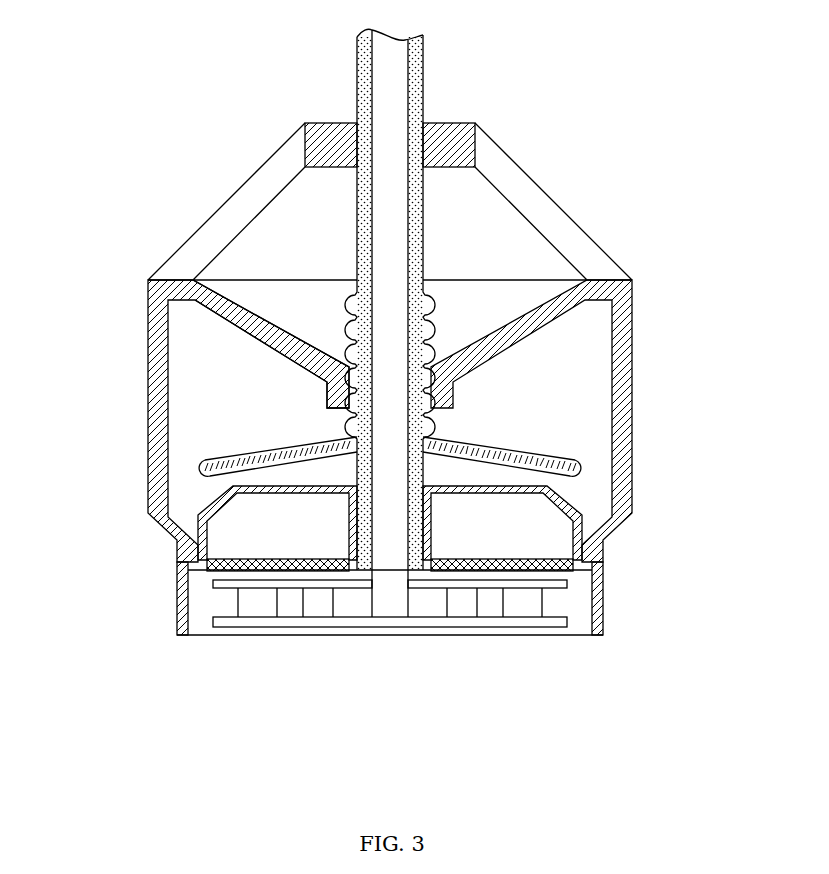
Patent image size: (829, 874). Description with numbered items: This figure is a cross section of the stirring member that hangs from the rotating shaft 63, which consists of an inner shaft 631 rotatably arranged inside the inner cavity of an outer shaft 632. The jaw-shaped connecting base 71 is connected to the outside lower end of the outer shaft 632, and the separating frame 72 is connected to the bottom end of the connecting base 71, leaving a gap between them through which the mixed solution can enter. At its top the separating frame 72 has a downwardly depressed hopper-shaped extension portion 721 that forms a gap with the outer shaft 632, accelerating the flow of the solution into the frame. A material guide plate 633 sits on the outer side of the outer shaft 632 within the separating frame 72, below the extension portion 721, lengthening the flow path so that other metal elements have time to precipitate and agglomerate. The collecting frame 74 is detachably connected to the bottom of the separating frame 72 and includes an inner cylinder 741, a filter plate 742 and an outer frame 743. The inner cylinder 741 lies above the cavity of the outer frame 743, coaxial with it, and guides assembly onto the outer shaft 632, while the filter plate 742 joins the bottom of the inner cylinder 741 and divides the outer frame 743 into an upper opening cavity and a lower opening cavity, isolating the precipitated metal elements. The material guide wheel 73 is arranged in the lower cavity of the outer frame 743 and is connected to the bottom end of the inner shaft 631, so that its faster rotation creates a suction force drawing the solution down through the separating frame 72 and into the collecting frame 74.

The rotating shaft 63 is at (464, 323).
The inner shaft 631 is at (417, 180).
The outer shaft 632 is at (388, 268).
The material guide plate 633 is at (518, 450).
The jaw-shaped connecting base 71 is at (325, 140).
The separating frame 72 is at (334, 342).
The extension portion 721 is at (270, 348).
The material guide wheel 73 is at (260, 608).
The collecting frame 74 is at (390, 635).
The inner cylinder 741 is at (350, 565).
The filter plate 742 is at (475, 570).
The outer frame 743 is at (287, 712).